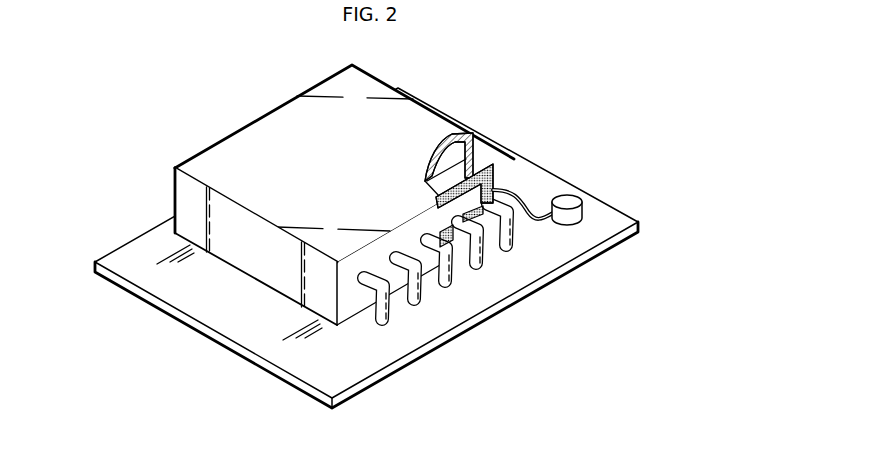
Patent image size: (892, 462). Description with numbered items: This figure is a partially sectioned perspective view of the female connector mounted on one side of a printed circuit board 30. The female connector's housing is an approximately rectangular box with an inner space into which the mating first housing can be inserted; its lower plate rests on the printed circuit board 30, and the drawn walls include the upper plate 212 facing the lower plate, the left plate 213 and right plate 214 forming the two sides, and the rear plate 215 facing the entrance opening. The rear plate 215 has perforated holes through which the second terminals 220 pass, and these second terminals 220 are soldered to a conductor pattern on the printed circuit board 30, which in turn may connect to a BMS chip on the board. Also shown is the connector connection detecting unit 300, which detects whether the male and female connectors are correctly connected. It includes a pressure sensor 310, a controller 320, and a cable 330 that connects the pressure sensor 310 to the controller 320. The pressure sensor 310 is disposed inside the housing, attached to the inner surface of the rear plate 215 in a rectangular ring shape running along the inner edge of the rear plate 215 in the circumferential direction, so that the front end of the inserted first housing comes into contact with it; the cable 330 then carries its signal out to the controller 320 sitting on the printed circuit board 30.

The printed circuit board 30 is at (618, 222).
The upper plate 212 is at (279, 117).
The left plate 213 is at (183, 204).
The right plate 214 is at (477, 140).
The rear plate 215 is at (352, 298).
The second terminals 220 is at (481, 258).
The connector connection detecting unit 300 is at (537, 155).
The pressure sensor 310 is at (497, 176).
The controller 320 is at (595, 165).
The cable 330 is at (526, 198).